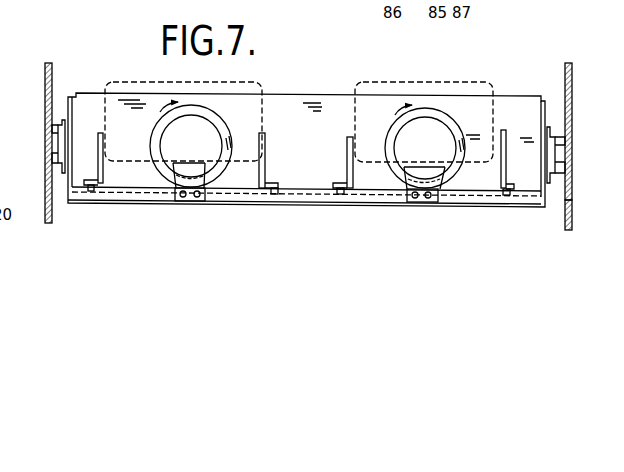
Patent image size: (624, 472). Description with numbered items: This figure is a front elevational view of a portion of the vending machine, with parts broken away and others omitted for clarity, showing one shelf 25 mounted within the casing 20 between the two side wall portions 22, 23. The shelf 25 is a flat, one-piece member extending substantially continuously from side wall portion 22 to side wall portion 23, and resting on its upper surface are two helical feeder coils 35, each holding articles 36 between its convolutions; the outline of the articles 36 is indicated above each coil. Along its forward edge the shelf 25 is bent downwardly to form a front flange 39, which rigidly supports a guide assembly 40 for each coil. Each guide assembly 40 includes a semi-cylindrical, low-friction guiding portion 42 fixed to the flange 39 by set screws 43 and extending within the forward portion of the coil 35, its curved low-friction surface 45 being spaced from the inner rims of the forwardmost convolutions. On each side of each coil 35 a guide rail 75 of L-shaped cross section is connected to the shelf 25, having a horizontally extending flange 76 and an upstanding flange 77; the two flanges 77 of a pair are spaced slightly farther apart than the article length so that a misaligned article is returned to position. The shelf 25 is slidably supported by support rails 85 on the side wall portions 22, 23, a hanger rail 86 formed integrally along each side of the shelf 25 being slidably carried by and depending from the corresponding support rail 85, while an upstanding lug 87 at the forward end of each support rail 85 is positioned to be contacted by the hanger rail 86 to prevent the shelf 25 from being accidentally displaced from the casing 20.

The casing 20 is at (574, 204).
The side wall portion 22 is at (45, 82).
The side wall portion 23 is at (572, 88).
The shelf 25 is at (545, 205).
The helical feeder coil 35 is at (238, 119).
The article 36 is at (264, 84).
The front flange 39 is at (110, 201).
The guide assembly 40 is at (175, 195).
The guiding portion 42 is at (185, 165).
The set screw 43 is at (197, 198).
The curved low-friction surface 45 is at (150, 190).
The guide rail 75 is at (97, 142).
The horizontally extending flange 76 is at (88, 184).
The upstanding flange 77 is at (103, 143).
The support rail 85 is at (52, 160).
The hanger rail 86 is at (52, 130).
The upstanding lug 87 is at (62, 122).